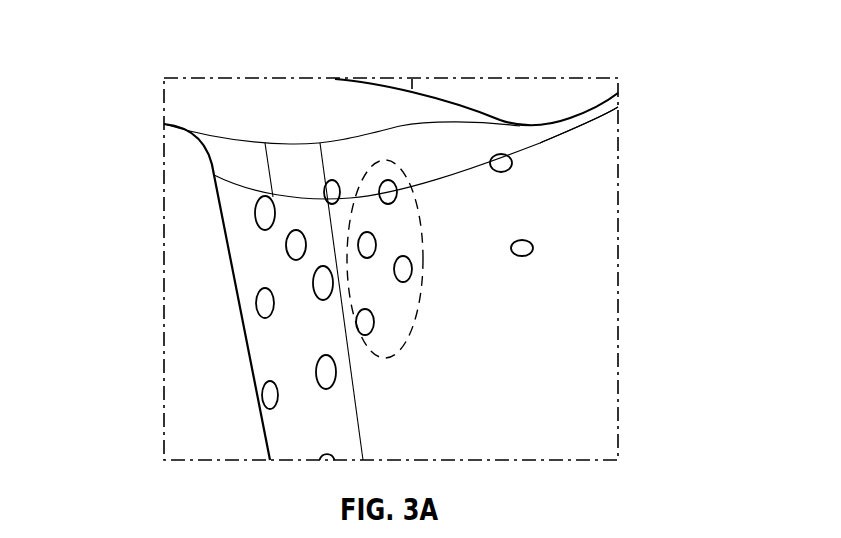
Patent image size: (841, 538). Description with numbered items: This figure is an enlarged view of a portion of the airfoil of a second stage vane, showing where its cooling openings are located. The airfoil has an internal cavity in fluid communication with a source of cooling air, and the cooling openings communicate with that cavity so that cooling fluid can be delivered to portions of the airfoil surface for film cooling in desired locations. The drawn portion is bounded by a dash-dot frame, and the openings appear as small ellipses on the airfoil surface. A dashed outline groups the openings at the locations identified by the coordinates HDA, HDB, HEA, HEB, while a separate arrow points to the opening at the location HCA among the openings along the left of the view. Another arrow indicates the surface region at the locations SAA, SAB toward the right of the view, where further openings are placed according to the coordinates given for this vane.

The cooling opening location HCA is at (284, 244).
The cooling opening location HDA is at (450, 180).
The cooling opening location HDB is at (450, 180).
The cooling opening location HEA is at (450, 180).
The cooling opening location HEB is at (568, 34).
The cooling opening location SAA is at (658, 182).
The cooling opening location SAB is at (777, 256).